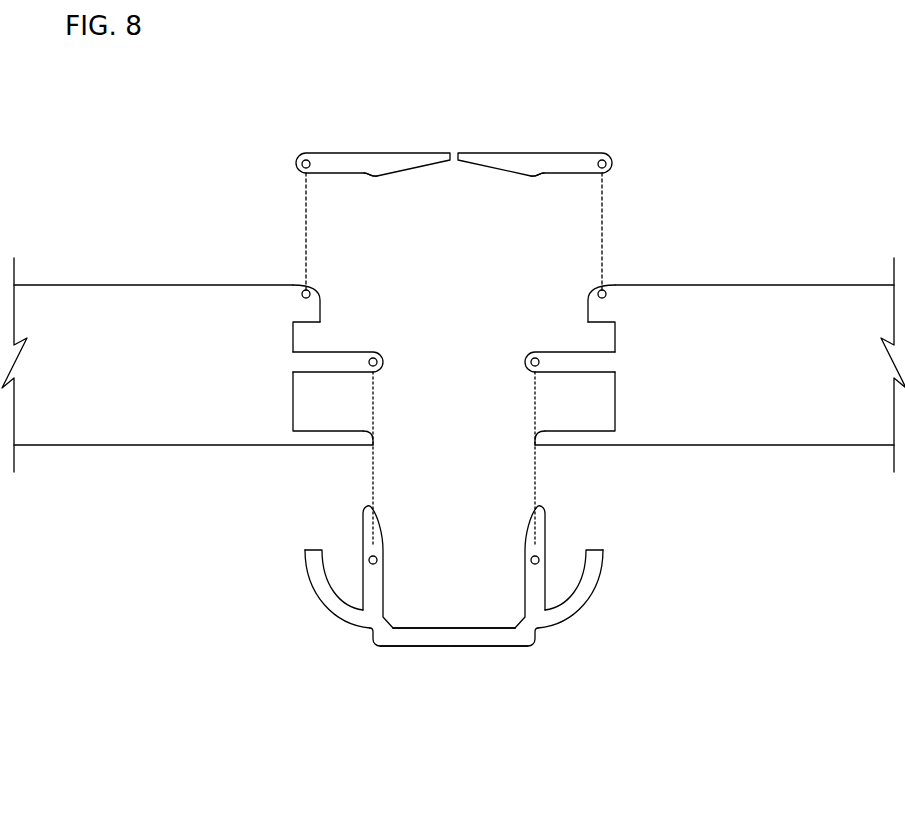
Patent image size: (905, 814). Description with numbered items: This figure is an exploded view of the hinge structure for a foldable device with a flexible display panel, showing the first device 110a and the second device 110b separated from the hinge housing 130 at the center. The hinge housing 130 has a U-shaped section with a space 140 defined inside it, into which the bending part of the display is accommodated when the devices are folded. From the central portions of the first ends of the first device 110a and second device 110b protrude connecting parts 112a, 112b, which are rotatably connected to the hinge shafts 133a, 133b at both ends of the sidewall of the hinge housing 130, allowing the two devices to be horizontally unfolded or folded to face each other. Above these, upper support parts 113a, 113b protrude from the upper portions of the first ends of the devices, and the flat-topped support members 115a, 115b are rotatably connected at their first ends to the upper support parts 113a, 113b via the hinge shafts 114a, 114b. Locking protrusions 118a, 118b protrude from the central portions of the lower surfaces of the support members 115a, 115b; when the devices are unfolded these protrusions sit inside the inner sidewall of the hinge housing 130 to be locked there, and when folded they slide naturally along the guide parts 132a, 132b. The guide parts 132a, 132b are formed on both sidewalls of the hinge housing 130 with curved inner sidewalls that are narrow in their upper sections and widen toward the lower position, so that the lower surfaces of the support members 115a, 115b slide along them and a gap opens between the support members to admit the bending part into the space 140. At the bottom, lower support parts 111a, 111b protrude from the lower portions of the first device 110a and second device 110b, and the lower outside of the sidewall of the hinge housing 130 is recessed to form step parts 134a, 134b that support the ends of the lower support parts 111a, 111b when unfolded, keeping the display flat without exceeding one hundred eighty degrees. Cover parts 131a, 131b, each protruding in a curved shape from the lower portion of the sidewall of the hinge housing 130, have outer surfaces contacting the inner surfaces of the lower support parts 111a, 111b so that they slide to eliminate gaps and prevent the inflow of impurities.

The first device 110a is at (86, 430).
The second device 110b is at (720, 392).
The lower support part 111a is at (345, 438).
The lower support part 111b is at (614, 459).
The connecting part 112a is at (325, 368).
The connecting part 112b is at (641, 399).
The upper support part 113a is at (316, 312).
The upper support part 113b is at (546, 321).
The hinge shaft 114a is at (311, 290).
The hinge shaft 114b is at (568, 247).
The support member 115a is at (371, 163).
The support member 115b is at (535, 125).
The locking protrusion 118a is at (372, 177).
The locking protrusion 118b is at (536, 177).
The hinge housing 130 is at (432, 640).
The cover part 131a is at (317, 585).
The cover part 131b is at (625, 589).
The guide part 132a is at (370, 532).
The guide part 132b is at (587, 564).
The hinge shaft 133a is at (380, 362).
The hinge shaft 133b is at (530, 360).
The step part 134a is at (373, 646).
The step part 134b is at (536, 646).
The space 140 is at (487, 612).